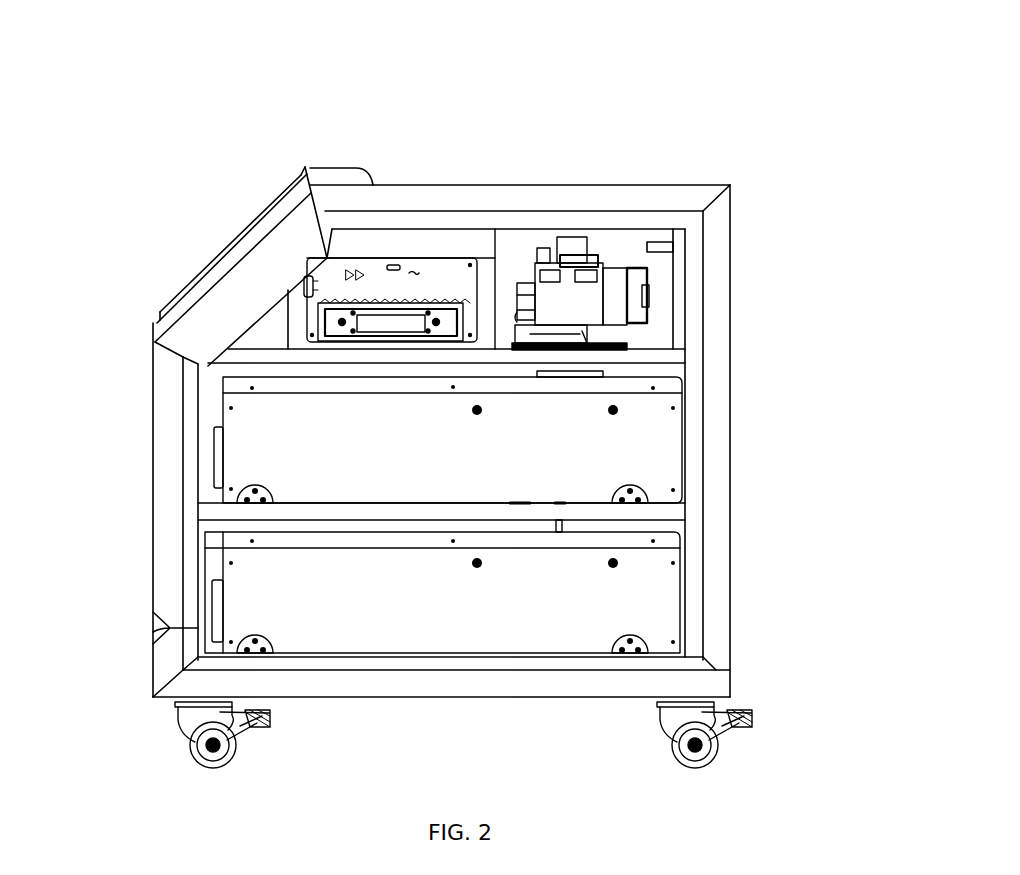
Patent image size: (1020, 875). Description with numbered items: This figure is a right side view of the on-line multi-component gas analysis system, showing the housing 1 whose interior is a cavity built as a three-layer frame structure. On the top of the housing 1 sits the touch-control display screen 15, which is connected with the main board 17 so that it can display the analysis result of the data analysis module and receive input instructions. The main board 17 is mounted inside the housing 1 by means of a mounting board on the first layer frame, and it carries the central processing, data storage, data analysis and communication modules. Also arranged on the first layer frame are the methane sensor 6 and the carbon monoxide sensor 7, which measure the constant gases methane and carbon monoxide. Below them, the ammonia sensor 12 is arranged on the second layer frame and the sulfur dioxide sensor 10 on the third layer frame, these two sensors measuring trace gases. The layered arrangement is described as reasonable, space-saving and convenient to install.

The housing 1 is at (473, 195).
The touch-control display screen 15 is at (218, 250).
The main board 17 is at (429, 245).
The methane sensor 6 is at (335, 273).
The carbon monoxide sensor 7 is at (648, 297).
The ammonia sensor 12 is at (685, 443).
The sulfur dioxide sensor 10 is at (672, 642).